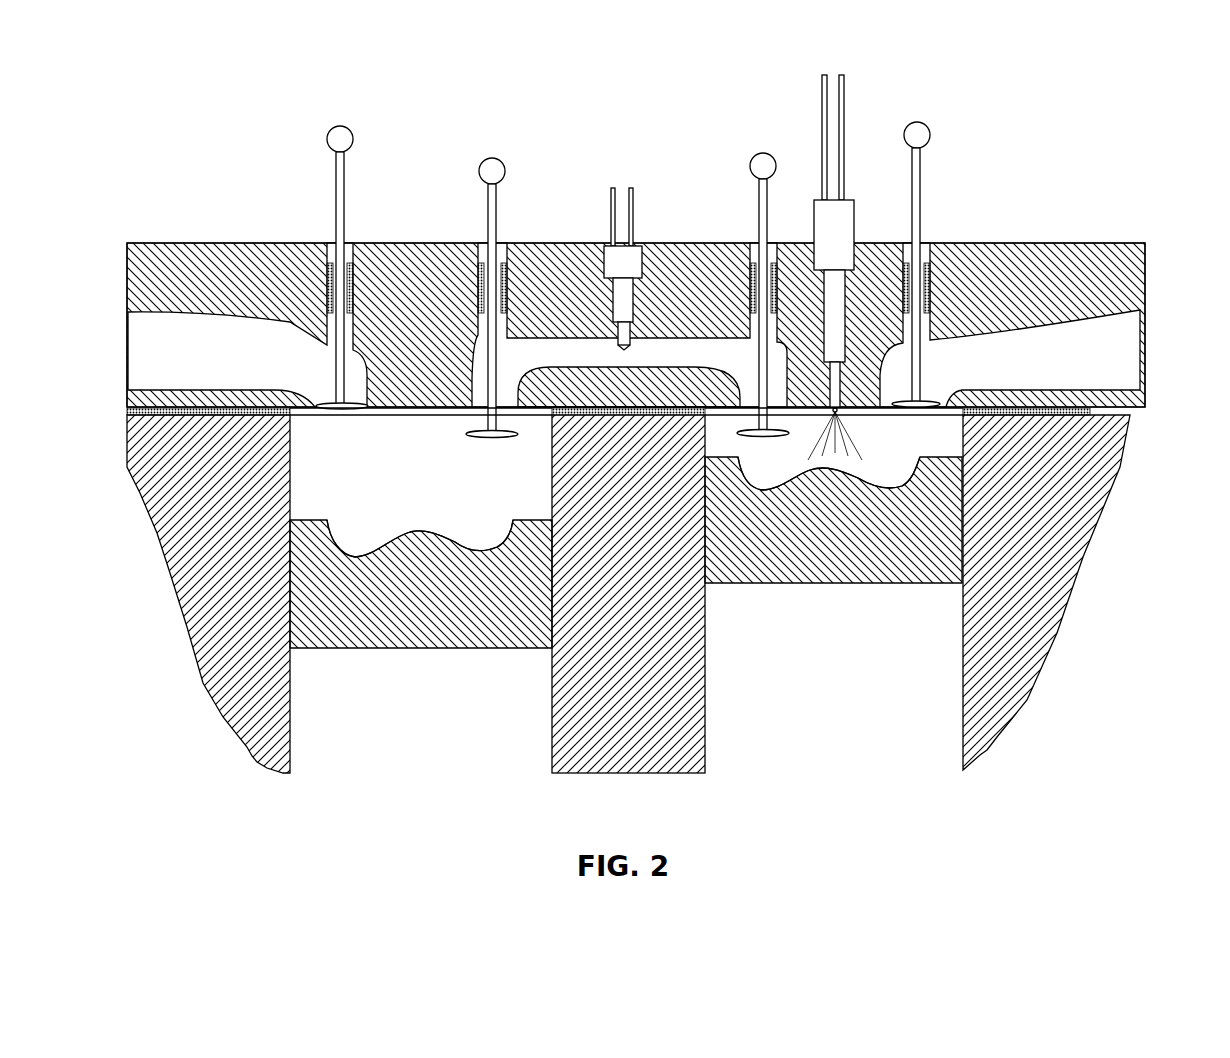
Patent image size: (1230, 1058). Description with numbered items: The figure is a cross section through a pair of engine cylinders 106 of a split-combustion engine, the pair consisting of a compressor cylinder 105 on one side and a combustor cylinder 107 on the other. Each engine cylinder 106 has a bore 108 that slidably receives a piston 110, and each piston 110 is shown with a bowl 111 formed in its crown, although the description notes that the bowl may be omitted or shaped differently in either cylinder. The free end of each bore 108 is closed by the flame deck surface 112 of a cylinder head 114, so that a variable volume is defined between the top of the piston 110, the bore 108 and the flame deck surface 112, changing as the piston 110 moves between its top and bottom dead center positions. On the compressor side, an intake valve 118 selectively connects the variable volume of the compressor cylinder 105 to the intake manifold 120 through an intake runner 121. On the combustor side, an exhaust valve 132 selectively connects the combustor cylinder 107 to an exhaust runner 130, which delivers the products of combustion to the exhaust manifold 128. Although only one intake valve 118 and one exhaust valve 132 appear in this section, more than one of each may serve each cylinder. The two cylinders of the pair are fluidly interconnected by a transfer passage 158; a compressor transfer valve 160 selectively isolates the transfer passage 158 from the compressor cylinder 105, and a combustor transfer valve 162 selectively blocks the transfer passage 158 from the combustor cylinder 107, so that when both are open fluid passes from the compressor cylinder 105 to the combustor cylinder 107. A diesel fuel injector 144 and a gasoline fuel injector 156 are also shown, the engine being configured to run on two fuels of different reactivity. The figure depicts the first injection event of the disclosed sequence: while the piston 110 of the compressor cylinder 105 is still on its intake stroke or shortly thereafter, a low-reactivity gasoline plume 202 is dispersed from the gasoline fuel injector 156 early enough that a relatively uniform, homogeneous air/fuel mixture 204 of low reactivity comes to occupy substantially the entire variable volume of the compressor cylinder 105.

The compressor cylinder 105 is at (830, 640).
The engine cylinder 106 is at (885, 445).
The combustor cylinder 107 is at (437, 682).
The bore 108 is at (651, 591).
The piston 110 is at (302, 648).
The bowl 111 is at (371, 525).
The flame deck surface 112 is at (1142, 410).
The cylinder head 114 is at (980, 243).
The intake valve 118 is at (936, 392).
The intake manifold 120 is at (1083, 369).
The intake runner 121 is at (1080, 312).
The exhaust manifold 128 is at (150, 348).
The exhaust runner 130 is at (236, 318).
The exhaust valve 132 is at (324, 402).
The diesel fuel injector 144 is at (615, 267).
The gasoline fuel injector 156 is at (842, 222).
The transfer passage 158 is at (655, 353).
The compressor transfer valve 160 is at (746, 420).
The combustor transfer valve 162 is at (502, 420).
The gasoline plume 202 is at (843, 452).
The homogeneous air/fuel mixture 204 is at (767, 485).